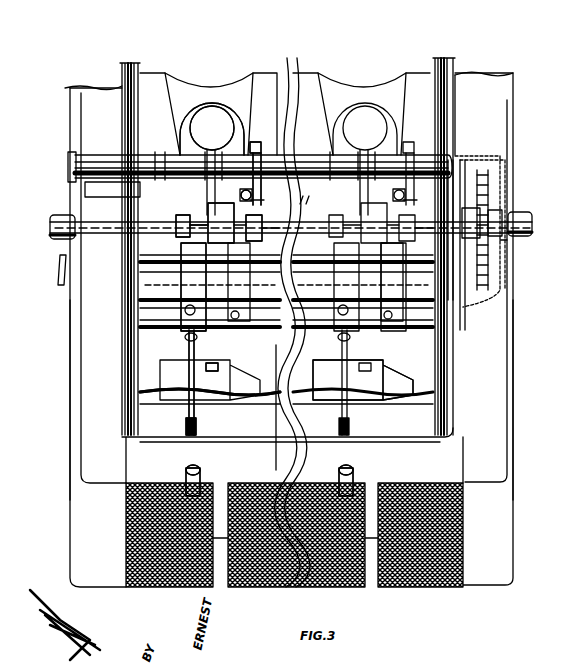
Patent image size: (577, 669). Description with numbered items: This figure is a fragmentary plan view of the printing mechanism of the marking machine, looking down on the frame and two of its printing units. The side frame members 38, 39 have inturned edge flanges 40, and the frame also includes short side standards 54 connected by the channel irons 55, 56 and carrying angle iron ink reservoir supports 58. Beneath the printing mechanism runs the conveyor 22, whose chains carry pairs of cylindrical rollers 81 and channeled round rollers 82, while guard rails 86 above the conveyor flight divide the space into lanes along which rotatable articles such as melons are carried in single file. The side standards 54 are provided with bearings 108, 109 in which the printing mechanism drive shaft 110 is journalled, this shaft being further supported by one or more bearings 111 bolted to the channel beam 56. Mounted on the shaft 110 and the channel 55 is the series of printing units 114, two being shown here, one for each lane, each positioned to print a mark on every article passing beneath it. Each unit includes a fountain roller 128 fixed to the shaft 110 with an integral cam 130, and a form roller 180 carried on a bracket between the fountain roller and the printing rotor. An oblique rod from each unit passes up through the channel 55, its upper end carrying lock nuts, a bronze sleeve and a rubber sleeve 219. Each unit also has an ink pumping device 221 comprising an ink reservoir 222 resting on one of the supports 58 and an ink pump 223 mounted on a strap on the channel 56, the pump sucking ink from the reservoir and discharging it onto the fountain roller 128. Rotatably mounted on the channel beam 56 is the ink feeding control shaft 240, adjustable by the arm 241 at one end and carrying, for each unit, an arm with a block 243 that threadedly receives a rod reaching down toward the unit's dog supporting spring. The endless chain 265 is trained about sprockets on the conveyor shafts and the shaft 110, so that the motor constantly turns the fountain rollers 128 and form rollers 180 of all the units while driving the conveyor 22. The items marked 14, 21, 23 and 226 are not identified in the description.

The strip workpiece 14 is at (312, 103).
The frame 21 is at (523, 469).
The conveyor 22 is at (430, 381).
The side plate 23 is at (500, 137).
The side frame member 38 is at (70, 343).
The side frame member 39 is at (513, 337).
The inturned edge flange 40 is at (78, 540).
The short side standard 54 is at (80, 398).
The channel iron 55 is at (455, 464).
The channel iron 56 is at (130, 188).
The angle iron ink reservoir support 58 is at (240, 142).
The cylindrical roller 81 is at (165, 292).
The round roller 82 is at (165, 368).
The guard rail 86 is at (130, 345).
The bearing 108 is at (55, 216).
The bearing 109 is at (520, 212).
The printing mechanism drive shaft 110 is at (455, 222).
The bearing 111 is at (310, 204).
The printing unit 114 is at (223, 392).
The fountain roller 128 is at (205, 212).
The cam 130 is at (183, 208).
The form roller 180 is at (382, 287).
The rubber sleeve 219 is at (186, 474).
The ink pumping device 221 is at (204, 103).
The ink reservoir 222 is at (220, 116).
The ink pump 223 is at (246, 236).
The drive shaft 226 is at (540, 244).
The ink feeding control shaft 240 is at (90, 160).
The arm 241 is at (60, 272).
The block 243 is at (245, 200).
The endless chain 265 is at (503, 273).